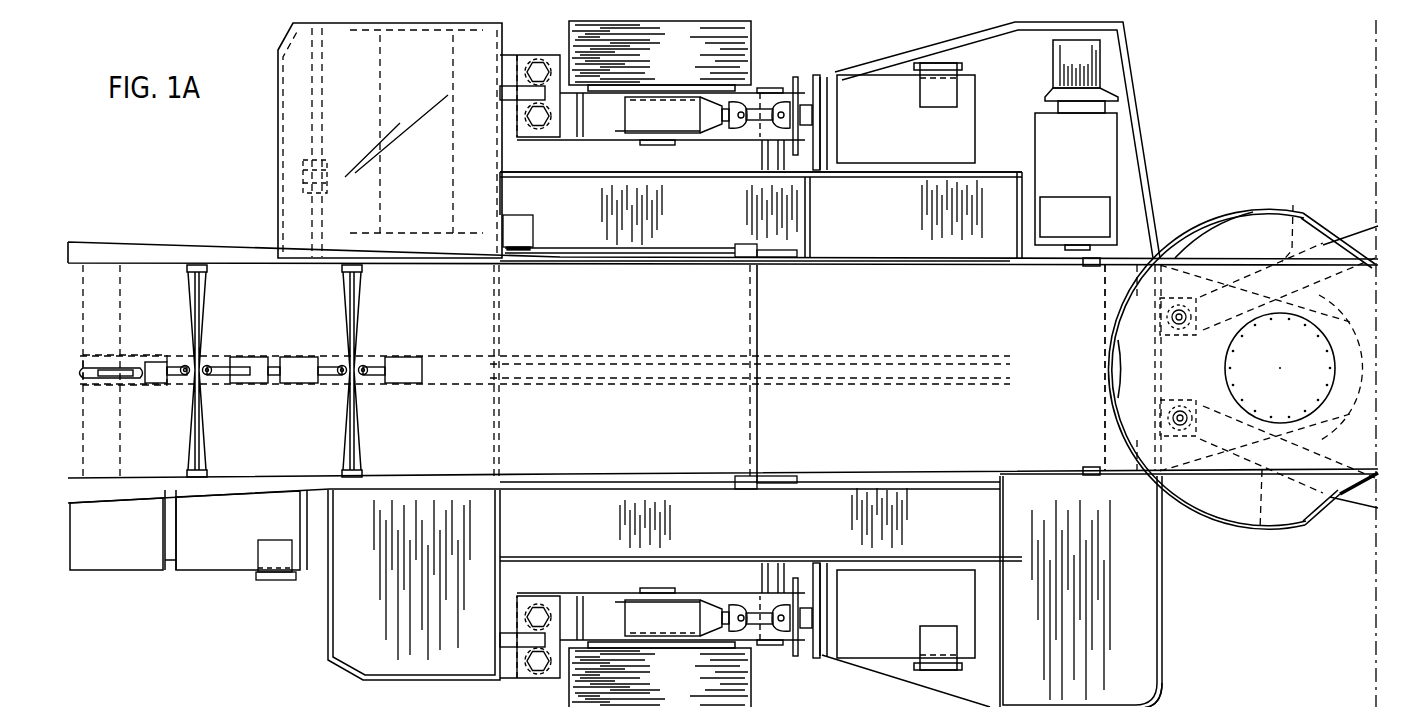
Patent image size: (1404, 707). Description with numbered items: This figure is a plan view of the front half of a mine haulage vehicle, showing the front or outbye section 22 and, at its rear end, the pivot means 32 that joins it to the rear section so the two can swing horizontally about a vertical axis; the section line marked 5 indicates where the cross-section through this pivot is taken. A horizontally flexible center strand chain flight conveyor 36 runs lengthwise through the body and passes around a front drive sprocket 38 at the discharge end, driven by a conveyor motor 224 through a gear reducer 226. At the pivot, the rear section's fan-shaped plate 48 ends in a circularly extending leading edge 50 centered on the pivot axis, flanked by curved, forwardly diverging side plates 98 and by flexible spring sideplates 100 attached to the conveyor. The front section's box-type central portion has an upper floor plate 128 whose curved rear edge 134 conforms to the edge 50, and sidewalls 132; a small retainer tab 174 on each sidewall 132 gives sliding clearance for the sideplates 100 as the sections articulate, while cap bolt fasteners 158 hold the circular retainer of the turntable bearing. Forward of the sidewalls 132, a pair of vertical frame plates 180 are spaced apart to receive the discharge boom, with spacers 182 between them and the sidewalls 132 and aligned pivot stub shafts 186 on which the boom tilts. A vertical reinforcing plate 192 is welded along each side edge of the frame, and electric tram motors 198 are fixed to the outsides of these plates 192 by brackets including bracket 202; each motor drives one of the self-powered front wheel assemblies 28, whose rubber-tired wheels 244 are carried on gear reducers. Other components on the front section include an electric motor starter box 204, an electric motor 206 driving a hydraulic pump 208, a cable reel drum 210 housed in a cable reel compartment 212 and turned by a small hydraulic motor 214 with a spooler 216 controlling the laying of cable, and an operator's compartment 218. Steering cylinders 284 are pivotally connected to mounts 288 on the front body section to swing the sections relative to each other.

The front or outbye section 22 is at (1164, 706).
The front wheel assembly 28 is at (768, 84).
The pivot means 32 is at (1323, 400).
The center strand chain flight conveyor 36 is at (186, 292).
The front drive sprocket 38 is at (84, 373).
The fan-shaped plate 48 is at (1361, 308).
The circularly extending leading edge 50 is at (1207, 222).
The curved side plate 98 is at (1327, 238).
The spring sideplate 100 is at (1237, 262).
The upper floor plate 128 is at (884, 330).
The sidewall 132 is at (884, 258).
The rear edge 134 is at (1130, 322).
The cap bolt fastener 158 is at (1232, 388).
The retainer tab 174 is at (1092, 267).
The vertical frame plate 180 is at (649, 252).
The spacer 182 is at (806, 252).
The pivot stub shaft 186 is at (749, 250).
The vertical reinforcing plate 192 is at (694, 174).
The electric tram motor 198 is at (897, 616).
The bracket 202 is at (970, 595).
The electric motor starter box 204 is at (385, 659).
The electric motor 206 is at (1093, 157).
The hydraulic pump 208 is at (1094, 62).
The cable reel drum 210 is at (380, 123).
The cable reel compartment 212 is at (268, 172).
The hydraulic motor 214 is at (526, 232).
The spooler 216 is at (303, 185).
The operator's compartment 218 is at (1139, 688).
The conveyor motor 224 is at (245, 551).
The gear reducer 226 is at (140, 552).
The rubber-tired wheel 244 is at (691, 69).
The steering cylinder 284 is at (1258, 535).
The mount 288 is at (1153, 417).
The section line 5- 5 is at (1078, 371).